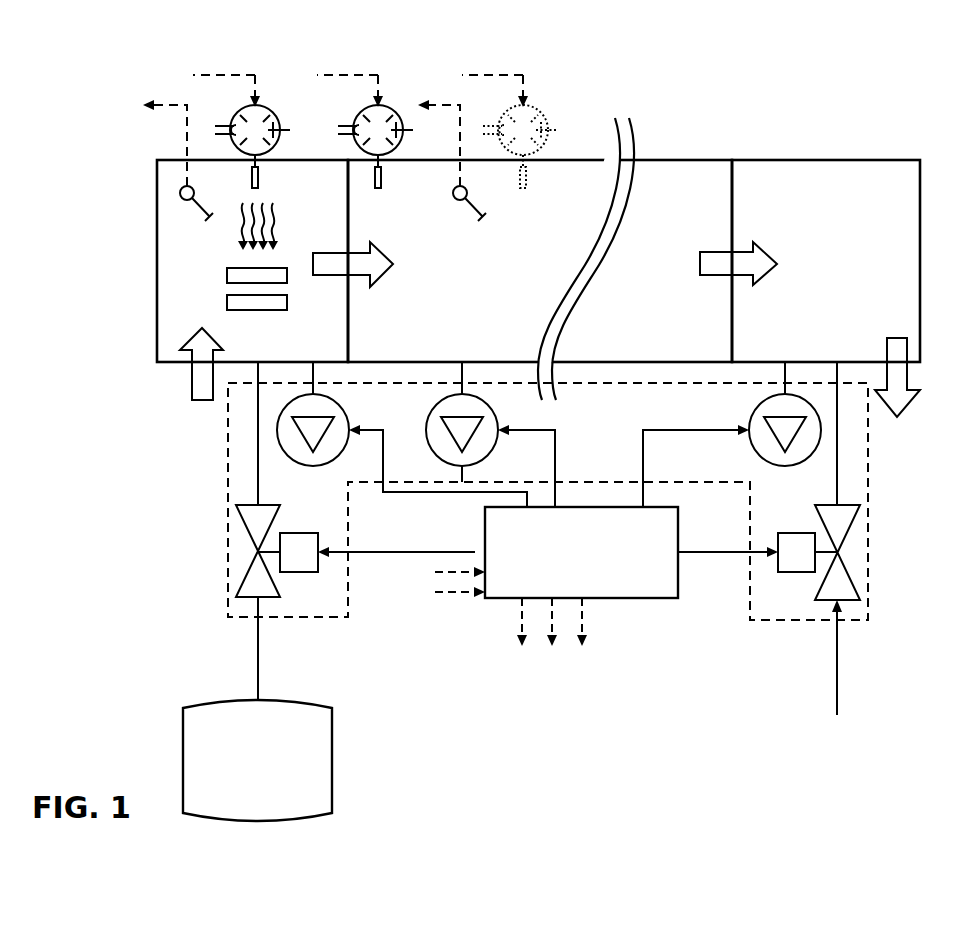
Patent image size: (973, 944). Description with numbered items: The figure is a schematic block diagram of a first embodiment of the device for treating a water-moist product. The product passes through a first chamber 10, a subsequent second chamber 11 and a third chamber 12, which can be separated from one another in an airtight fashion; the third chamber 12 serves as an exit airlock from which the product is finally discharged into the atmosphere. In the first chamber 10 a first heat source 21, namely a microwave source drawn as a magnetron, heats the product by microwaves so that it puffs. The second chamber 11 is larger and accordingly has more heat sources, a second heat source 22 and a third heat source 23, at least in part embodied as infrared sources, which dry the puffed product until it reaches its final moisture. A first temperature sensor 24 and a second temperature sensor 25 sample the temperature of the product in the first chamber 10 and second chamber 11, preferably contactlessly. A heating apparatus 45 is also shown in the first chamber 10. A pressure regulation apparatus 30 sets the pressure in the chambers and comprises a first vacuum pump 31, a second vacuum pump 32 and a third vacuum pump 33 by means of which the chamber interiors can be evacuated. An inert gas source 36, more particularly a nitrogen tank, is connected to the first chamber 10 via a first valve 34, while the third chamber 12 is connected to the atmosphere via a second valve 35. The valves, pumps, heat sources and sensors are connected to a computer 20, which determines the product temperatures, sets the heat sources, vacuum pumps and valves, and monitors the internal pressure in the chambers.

The first chamber 10 is at (327, 219).
The second chamber 11 is at (696, 214).
The third chamber 12 is at (869, 214).
The computer 20 is at (596, 567).
The first heat source 21 is at (265, 107).
The second heat source 22 is at (388, 107).
The third heat source 23 is at (535, 107).
The first temperature sensor 24 is at (180, 195).
The second temperature sensor 25 is at (458, 201).
The pressure regulation apparatus 30 is at (870, 428).
The first vacuum pump 31 is at (277, 430).
The second vacuum pump 32 is at (462, 478).
The third vacuum pump 33 is at (821, 430).
The first valve 34 is at (243, 548).
The second valve 35 is at (858, 545).
The inert gas source 36 is at (272, 773).
The heating apparatus 45 is at (227, 275).